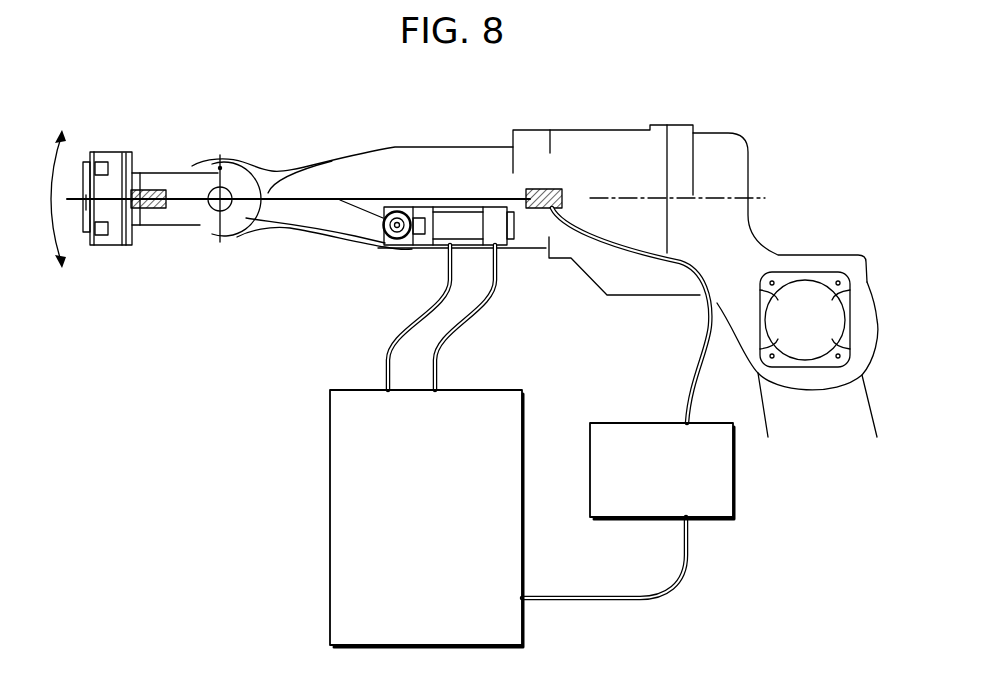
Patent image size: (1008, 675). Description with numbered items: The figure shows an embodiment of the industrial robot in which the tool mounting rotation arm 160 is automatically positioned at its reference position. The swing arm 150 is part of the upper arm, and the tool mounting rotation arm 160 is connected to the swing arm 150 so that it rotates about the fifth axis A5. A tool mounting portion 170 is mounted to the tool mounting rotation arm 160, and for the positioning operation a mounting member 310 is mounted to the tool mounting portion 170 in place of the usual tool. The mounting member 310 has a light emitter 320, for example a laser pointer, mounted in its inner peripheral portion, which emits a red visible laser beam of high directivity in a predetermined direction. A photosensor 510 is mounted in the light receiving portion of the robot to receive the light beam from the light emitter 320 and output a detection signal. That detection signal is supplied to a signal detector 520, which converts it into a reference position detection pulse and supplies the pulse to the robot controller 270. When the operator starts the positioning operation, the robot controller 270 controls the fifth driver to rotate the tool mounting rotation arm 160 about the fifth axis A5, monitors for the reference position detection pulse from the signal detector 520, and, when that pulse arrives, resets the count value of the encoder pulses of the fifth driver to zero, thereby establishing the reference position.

The swing arm 150 is at (439, 143).
The tool mounting rotation arm 160 is at (155, 163).
The tool mounting portion 170 is at (113, 240).
The mounting member 310 is at (88, 233).
The light emitter 320 is at (168, 189).
The photosensor 510 is at (556, 186).
The signal detector 520 is at (735, 487).
The robot controller 270 is at (486, 390).
The fifth axis A5 is at (216, 237).